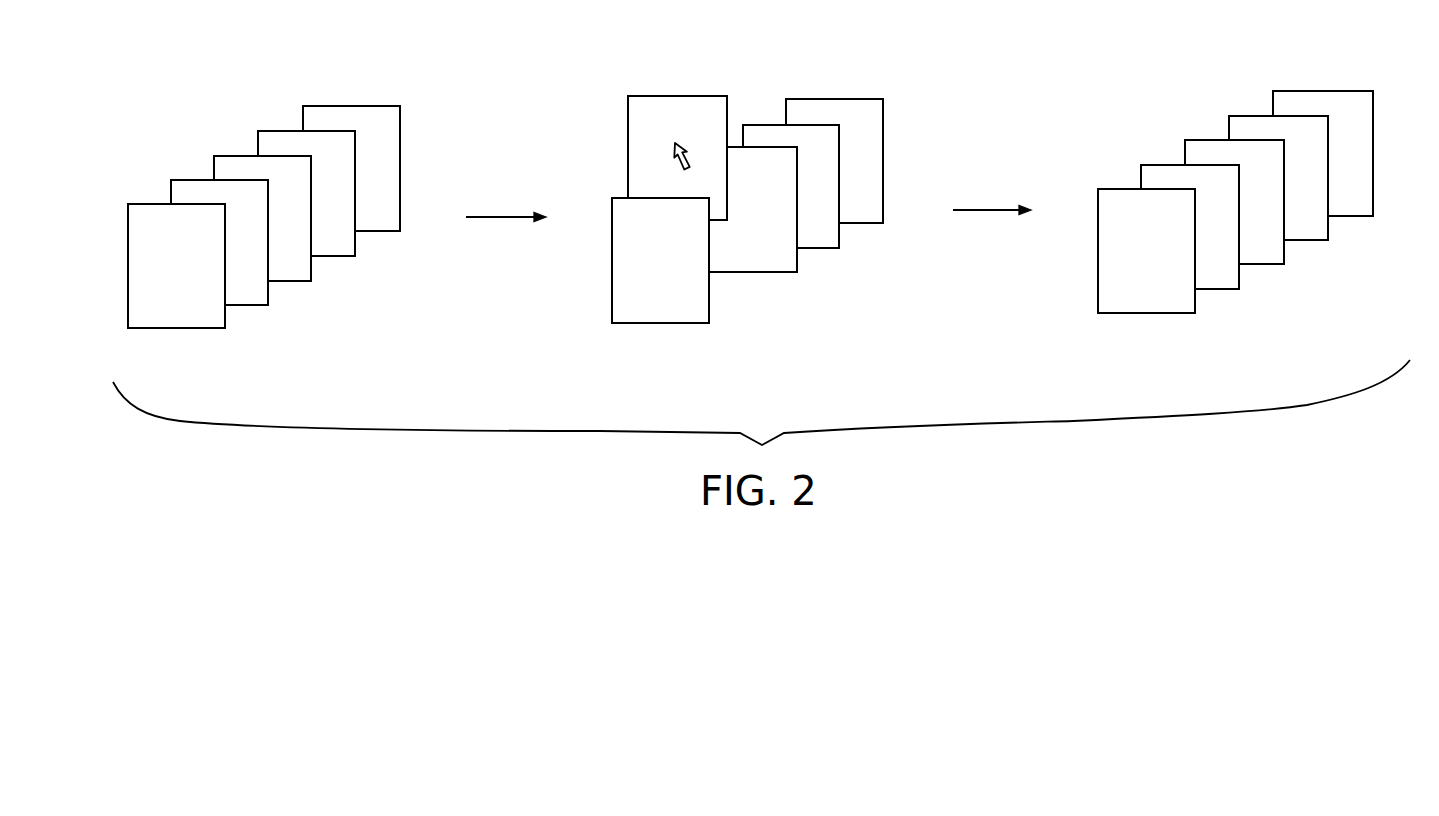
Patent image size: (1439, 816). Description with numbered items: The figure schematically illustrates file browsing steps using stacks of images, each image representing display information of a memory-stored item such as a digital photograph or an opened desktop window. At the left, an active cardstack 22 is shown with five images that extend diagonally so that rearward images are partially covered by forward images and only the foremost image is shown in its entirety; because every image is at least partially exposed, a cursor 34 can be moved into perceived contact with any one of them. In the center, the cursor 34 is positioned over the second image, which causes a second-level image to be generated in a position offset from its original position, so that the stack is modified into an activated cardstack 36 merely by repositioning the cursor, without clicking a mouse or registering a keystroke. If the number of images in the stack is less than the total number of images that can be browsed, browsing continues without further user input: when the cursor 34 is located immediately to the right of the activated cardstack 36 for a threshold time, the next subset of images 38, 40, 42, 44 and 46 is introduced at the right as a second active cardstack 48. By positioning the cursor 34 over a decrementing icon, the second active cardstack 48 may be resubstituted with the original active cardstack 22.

The active cardstack 22 is at (295, 214).
The cursor 34 is at (672, 156).
The activated cardstack 36 is at (760, 188).
The image 38 is at (1187, 310).
The image 40 is at (1232, 285).
The image 42 is at (1277, 260).
The image 44 is at (1322, 237).
The image 46 is at (1367, 212).
The second active cardstack 48 is at (1268, 198).